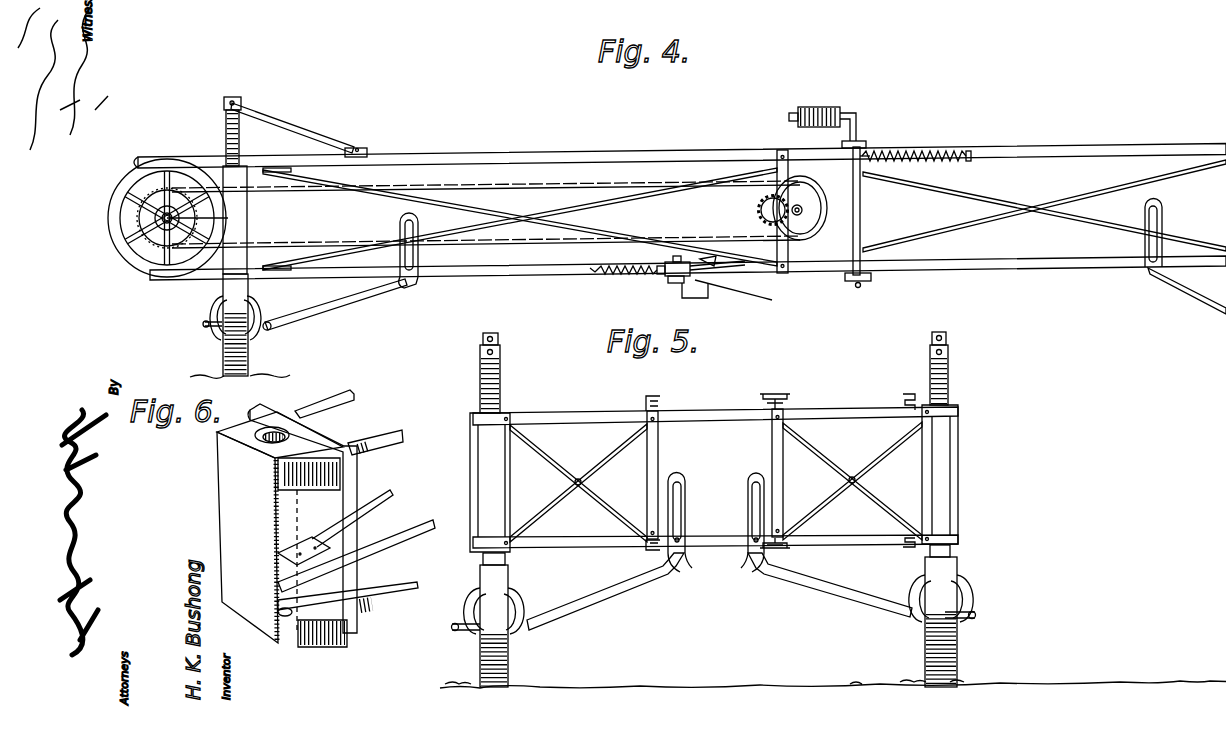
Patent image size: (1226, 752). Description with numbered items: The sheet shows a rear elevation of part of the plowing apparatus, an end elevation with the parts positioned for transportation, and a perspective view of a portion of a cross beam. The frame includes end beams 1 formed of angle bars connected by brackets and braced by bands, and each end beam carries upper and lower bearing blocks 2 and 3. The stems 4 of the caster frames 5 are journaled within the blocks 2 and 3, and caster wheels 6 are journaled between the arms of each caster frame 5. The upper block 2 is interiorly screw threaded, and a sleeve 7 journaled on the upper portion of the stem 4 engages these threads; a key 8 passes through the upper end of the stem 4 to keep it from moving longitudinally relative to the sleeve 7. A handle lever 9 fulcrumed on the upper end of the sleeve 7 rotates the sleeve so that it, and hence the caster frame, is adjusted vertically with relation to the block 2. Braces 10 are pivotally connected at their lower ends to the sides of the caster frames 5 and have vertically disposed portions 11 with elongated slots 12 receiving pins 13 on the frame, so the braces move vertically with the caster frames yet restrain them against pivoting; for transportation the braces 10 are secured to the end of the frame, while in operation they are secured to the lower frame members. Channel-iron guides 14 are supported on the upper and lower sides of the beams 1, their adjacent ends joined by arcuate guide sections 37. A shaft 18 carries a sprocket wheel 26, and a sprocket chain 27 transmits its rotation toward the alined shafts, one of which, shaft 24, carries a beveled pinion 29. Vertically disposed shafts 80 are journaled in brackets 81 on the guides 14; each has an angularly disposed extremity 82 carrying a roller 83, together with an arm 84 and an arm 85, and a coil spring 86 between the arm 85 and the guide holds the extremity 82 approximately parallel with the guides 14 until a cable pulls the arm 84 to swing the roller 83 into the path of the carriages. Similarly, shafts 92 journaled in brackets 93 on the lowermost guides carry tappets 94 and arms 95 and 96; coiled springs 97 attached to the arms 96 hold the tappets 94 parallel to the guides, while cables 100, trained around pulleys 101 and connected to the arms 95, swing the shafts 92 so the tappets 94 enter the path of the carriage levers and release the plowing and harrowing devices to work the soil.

In FIG. 4, the end beam 1 is at (247, 232).
In FIG. 5, the end beam 1 is at (736, 548).
In FIG. 6, the end beam 1 is at (380, 430).
In FIG. 6, the upper bearing block 2 is at (275, 430).
In FIG. 6, the lower bearing block 3 is at (290, 620).
In FIG. 4, the stem 4 is at (228, 278).
In FIG. 5, the stem 4 is at (490, 450).
In FIG. 4, the caster frame 5 is at (212, 312).
In FIG. 5, the caster frame 5 is at (968, 585).
In FIG. 4, the caster wheel 6 is at (226, 340).
In FIG. 5, the caster wheel 6 is at (958, 645).
In FIG. 4, the sleeve 7 is at (226, 138).
In FIG. 5, the sleeve 7 is at (502, 380).
In FIG. 4, the key 8 is at (242, 104).
In FIG. 5, the key 8 is at (500, 340).
In FIG. 4, the handle lever 9 is at (310, 135).
In FIG. 4, the brace 10 is at (352, 302).
In FIG. 5, the brace 10 is at (602, 597).
In FIG. 4, the vertically disposed portion 11 is at (416, 216).
In FIG. 5, the vertically disposed portion 11 is at (745, 476).
In FIG. 4, the elongated slot 12 is at (402, 226).
In FIG. 5, the elongated slot 12 is at (751, 510).
In FIG. 4, the pin 13 is at (416, 286).
In FIG. 5, the pin 13 is at (686, 562).
In FIG. 4, the guide 14 is at (661, 158).
In FIG. 5, the guide 14 is at (660, 398).
In FIG. 4, the shaft 18 is at (802, 212).
In FIG. 4, the shaft 24 is at (162, 218).
In FIG. 4, the sprocket wheel 26 is at (760, 211).
In FIG. 4, the sprocket chain 27 is at (537, 186).
In FIG. 4, the beveled pinion 29 is at (158, 240).
In FIG. 4, the arcuate guide section 37 is at (110, 236).
In FIG. 4, the vertically disposed shaft 80 is at (866, 188).
In FIG. 4, the bracket 81 is at (868, 282).
In FIG. 4, the angularly disposed extremity 82 is at (857, 112).
In FIG. 4, the roller 83 is at (818, 112).
In FIG. 4, the arm 84 is at (890, 152).
In FIG. 4, the arm 85 is at (858, 146).
In FIG. 4, the coil spring 86 is at (945, 150).
In FIG. 4, the shaft 92 is at (674, 283).
In FIG. 4, the bracket 93 is at (710, 285).
In FIG. 4, the tappet 94 is at (706, 296).
In FIG. 4, the arm 95 is at (660, 276).
In FIG. 4, the arm 96 is at (675, 258).
In FIG. 4, the coiled spring 97 is at (612, 274).
In FIG. 4, the cable 100 is at (700, 268).
In FIG. 4, the pulley 101 is at (716, 243).